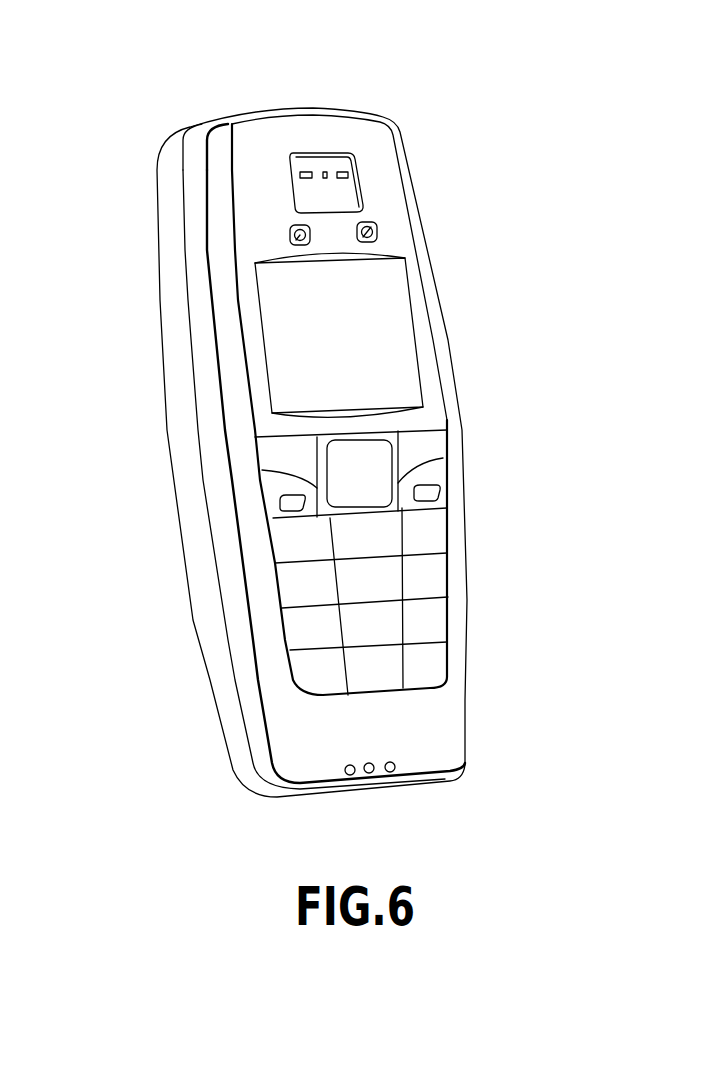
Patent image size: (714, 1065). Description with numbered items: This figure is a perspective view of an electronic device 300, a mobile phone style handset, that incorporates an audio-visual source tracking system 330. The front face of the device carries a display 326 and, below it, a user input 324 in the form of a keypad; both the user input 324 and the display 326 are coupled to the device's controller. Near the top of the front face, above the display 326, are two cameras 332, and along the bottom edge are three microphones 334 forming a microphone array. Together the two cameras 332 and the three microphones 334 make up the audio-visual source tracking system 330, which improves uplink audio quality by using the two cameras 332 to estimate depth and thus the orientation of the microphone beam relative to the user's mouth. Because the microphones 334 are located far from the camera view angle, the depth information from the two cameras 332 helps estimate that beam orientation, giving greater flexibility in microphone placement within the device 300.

The electronic device 300 is at (152, 72).
The user input 324 is at (470, 417).
The display 326 is at (370, 315).
The audio-visual source tracking system 330 is at (528, 193).
The cameras 332 is at (293, 230).
The microphones 334 is at (390, 773).